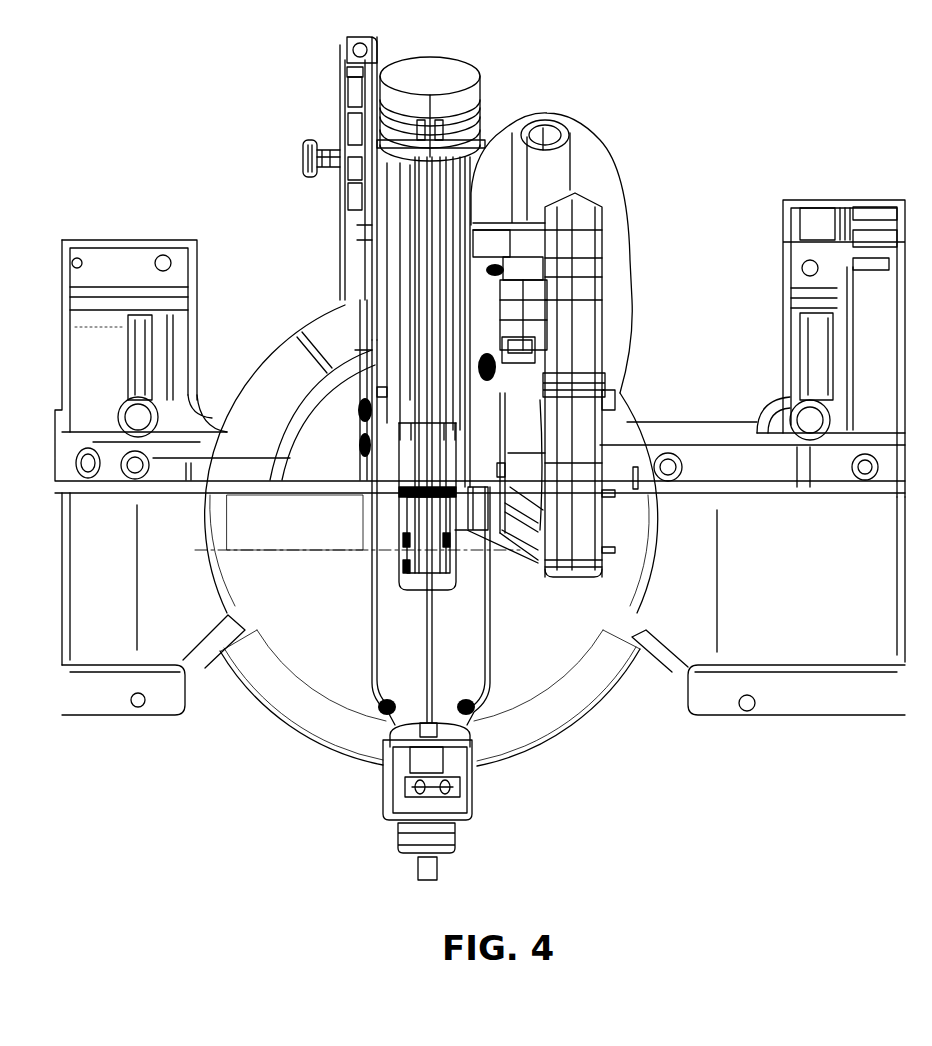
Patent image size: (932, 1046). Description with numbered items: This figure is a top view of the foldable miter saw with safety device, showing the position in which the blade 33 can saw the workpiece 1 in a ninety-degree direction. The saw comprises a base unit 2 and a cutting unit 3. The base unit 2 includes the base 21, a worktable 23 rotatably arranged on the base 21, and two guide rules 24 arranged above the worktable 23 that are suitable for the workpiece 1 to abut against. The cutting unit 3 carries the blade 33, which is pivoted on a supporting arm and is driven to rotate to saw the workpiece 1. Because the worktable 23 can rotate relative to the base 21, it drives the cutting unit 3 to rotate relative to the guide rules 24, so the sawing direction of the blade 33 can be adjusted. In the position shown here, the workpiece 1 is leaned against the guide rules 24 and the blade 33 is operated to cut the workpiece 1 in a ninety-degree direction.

The workpiece 1 is at (290, 555).
The base unit 2 is at (113, 727).
The cutting unit 3 is at (318, 97).
The base 21 is at (355, 737).
The worktable 23 is at (333, 690).
The guide rules 24 is at (700, 497).
The blade 33 is at (437, 618).